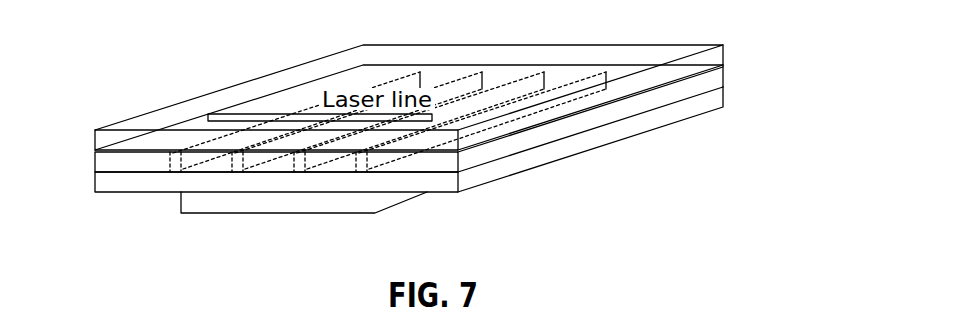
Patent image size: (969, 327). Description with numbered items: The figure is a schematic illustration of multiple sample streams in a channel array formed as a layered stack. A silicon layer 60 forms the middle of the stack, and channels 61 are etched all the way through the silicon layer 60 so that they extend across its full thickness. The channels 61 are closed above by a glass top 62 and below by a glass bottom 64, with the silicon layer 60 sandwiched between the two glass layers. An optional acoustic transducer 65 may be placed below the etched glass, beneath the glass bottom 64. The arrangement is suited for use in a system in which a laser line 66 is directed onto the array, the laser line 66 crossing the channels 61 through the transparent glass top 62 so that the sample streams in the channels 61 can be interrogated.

The silicon layer 60 is at (490, 152).
The channels 61 is at (317, 158).
The glass top 62 is at (703, 58).
The glass bottom 64 is at (700, 108).
The acoustic transducer 65 is at (236, 207).
The laser line 66 is at (243, 116).